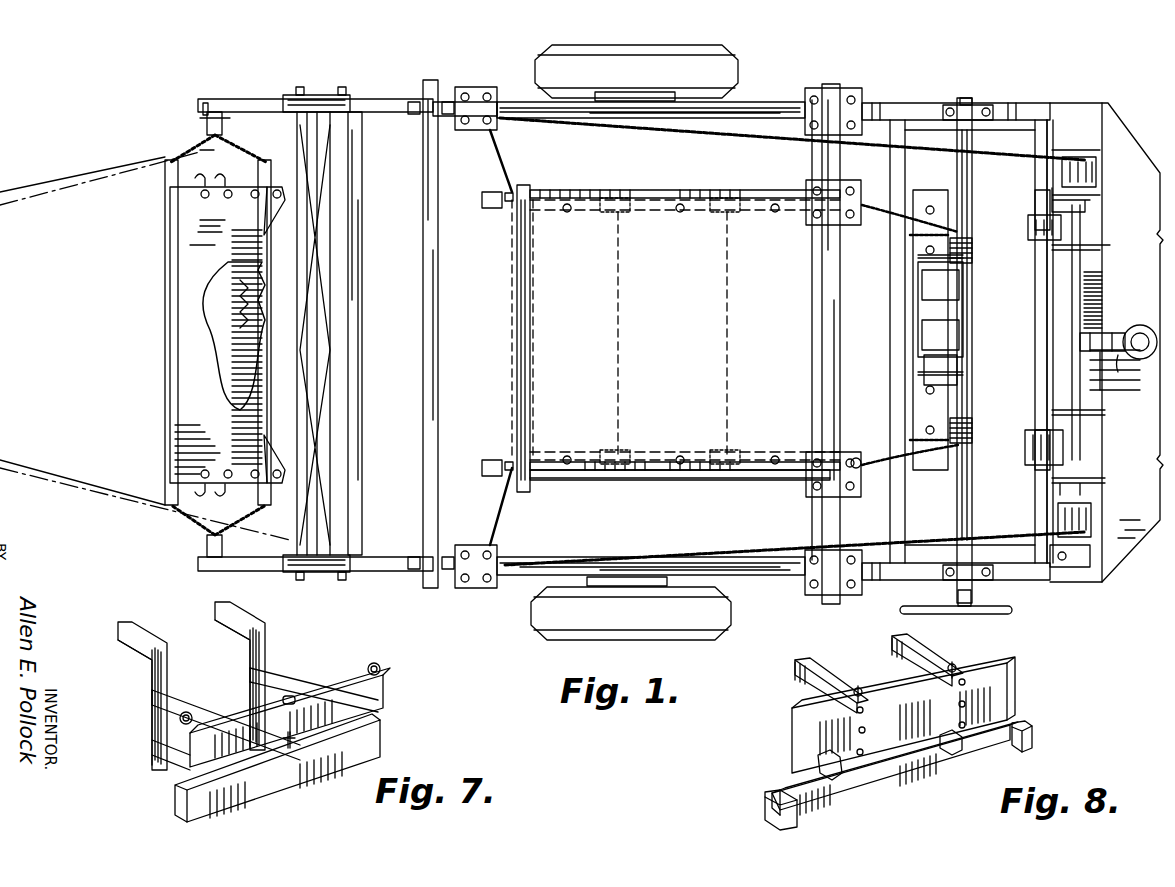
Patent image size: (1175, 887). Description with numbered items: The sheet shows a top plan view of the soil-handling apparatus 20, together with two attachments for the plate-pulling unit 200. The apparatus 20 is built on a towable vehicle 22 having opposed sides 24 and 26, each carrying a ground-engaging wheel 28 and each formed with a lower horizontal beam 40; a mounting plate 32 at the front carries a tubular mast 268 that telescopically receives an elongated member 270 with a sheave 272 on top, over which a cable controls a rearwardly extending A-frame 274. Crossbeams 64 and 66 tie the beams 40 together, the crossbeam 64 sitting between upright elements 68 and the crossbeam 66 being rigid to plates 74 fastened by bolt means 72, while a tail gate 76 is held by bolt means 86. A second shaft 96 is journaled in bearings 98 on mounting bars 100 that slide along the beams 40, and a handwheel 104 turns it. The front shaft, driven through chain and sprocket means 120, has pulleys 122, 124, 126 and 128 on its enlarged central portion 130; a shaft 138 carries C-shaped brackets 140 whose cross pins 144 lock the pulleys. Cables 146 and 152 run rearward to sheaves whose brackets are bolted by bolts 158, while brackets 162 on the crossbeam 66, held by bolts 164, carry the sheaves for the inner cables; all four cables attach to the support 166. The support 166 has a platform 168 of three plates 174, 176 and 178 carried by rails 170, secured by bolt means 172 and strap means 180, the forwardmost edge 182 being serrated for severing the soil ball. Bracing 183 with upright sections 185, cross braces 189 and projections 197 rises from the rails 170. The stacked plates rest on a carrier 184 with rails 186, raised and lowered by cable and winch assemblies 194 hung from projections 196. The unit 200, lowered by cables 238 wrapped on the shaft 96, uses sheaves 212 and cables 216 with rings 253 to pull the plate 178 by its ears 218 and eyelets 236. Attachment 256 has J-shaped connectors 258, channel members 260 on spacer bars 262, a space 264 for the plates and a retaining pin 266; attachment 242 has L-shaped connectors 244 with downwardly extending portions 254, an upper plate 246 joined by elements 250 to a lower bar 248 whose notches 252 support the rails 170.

In FIG. 1, the soil-handling apparatus 20 is at (908, 89).
In FIG. 1, the vehicle 22 is at (1068, 90).
In FIG. 1, the side 24 is at (766, 580).
In FIG. 1, the side 26 is at (525, 95).
In FIG. 1, the ground-engaging wheel 28 is at (722, 62).
In FIG. 1, the mounting plate 32 is at (1160, 292).
In FIG. 1, the beam 40 is at (687, 120).
In FIG. 1, the crossbeam 64 is at (421, 315).
In FIG. 1, the crossbeam 66 is at (820, 283).
In FIG. 1, the upright element 68 is at (425, 114).
In FIG. 1, the bolt means 72 is at (816, 92).
In FIG. 1, the plate 74 is at (856, 92).
In FIG. 1, the tail gate 76 is at (373, 248).
In FIG. 1, the bolt means 86 is at (330, 90).
In FIG. 1, the second shaft 96 is at (974, 405).
In FIG. 1, the bearing 98 is at (980, 104).
In FIG. 1, the mounting bar 100 is at (927, 104).
In FIG. 1, the handwheel 104 is at (1005, 615).
In FIG. 1, the chain and sprocket means 120 is at (1072, 580).
In FIG. 1, the pulley 122 is at (1085, 478).
In FIG. 1, the pulley 124 is at (1080, 428).
In FIG. 1, the pulley 126 is at (1090, 252).
In FIG. 1, the pulley 128 is at (1088, 205).
In FIG. 1, the central portion 130 is at (1082, 274).
In FIG. 1, the shaft 138 is at (1050, 350).
In FIG. 1, the C-shaped bracket 140 is at (1098, 172).
In FIG. 1, the cross pin 144 is at (1035, 245).
In FIG. 1, the cable 146 is at (716, 545).
In FIG. 1, the cable 152 is at (775, 137).
In FIG. 1, the bolt 158 is at (478, 90).
In FIG. 1, the bracket 162 is at (820, 235).
In FIG. 1, the bolt 164 is at (845, 230).
In FIG. 1, the support 166 is at (655, 490).
In FIG. 1, the platform 168 is at (542, 230).
In FIG. 1, the rail 170 is at (705, 190).
In FIG. 1, the bolt means 172 is at (570, 200).
In FIG. 1, the plate 174 is at (395, 290).
In FIG. 1, the plate 176 is at (228, 286).
In FIG. 1, the plate 178 is at (222, 315).
In FIG. 1, the strap means 180 is at (608, 214).
In FIG. 1, the forwardmost edge 182 is at (234, 336).
In FIG. 1, the bracing 183 is at (508, 377).
In FIG. 1, the carrier 184 is at (160, 199).
In FIG. 1, the upright section 185 is at (506, 194).
In FIG. 1, the rail 186 is at (168, 392).
In FIG. 1, the cross brace 189 is at (515, 332).
In FIG. 1, the cable and winch assembly 194 is at (198, 129).
In FIG. 1, the projection 196 is at (250, 99).
In FIG. 1, the projection 197 is at (492, 208).
In FIG. 1, the unit 200 is at (964, 352).
In FIG. 1, the sheave 212 is at (965, 315).
In FIG. 1, the cable 216 is at (965, 290).
In FIG. 1, the ear 218 is at (275, 208).
In FIG. 1, the eyelet 236 is at (262, 500).
In FIG. 1, the cable 238 is at (950, 230).
In FIG. 8, the attachment 242 is at (1022, 705).
In FIG. 8, the L-shaped connector 244 is at (812, 668).
In FIG. 8, the upper plate 246 is at (800, 738).
In FIG. 8, the lower bar 248 is at (920, 780).
In FIG. 8, the element 250 is at (820, 695).
In FIG. 8, the notch 252 is at (1035, 740).
In FIG. 1, the ring 253 is at (858, 455).
In FIG. 8, the downwardly extending portion 254 is at (795, 670).
In FIG. 7, the attachment 256 is at (392, 690).
In FIG. 7, the J-shaped connector 258 is at (150, 662).
In FIG. 7, the channel member 260 is at (338, 688).
In FIG. 7, the spacer bar 262 is at (262, 672).
In FIG. 7, the space 264 is at (375, 720).
In FIG. 7, the pin 266 is at (286, 745).
In FIG. 1, the tubular mast 268 is at (1135, 370).
In FIG. 1, the elongated member 270 is at (1118, 380).
In FIG. 1, the sheave 272 is at (1135, 336).
In FIG. 1, the A-frame 274 is at (26, 459).